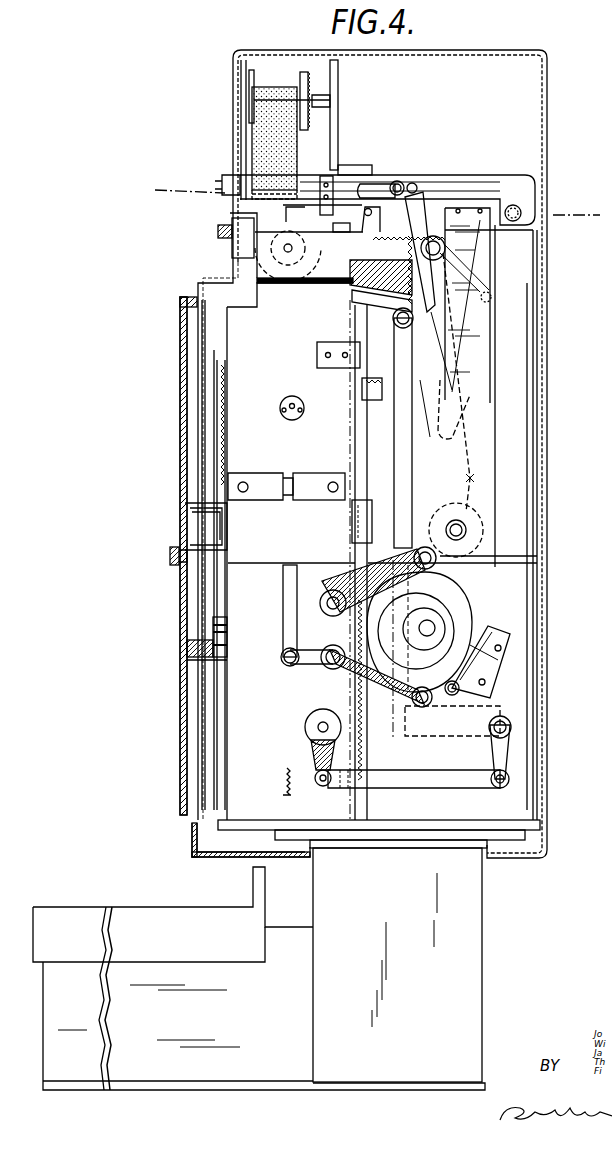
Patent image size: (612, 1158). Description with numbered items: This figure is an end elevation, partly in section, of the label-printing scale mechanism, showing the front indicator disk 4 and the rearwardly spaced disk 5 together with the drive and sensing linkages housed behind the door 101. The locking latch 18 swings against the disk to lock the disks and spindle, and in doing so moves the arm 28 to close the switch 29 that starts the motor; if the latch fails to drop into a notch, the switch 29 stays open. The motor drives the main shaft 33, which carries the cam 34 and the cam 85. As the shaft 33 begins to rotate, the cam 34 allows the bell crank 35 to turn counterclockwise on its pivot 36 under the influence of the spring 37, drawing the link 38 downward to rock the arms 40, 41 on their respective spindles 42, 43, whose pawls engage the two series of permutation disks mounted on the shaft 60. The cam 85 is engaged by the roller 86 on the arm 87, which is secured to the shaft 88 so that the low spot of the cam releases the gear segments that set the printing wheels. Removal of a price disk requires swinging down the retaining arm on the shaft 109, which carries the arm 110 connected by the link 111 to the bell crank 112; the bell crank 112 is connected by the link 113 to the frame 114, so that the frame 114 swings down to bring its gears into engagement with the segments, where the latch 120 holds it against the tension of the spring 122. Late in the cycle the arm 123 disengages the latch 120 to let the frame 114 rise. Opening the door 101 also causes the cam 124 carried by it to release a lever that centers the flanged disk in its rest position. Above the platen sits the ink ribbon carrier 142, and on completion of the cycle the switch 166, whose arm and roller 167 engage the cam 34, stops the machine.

The disk 4 is at (216, 376).
The disk 5 is at (360, 760).
The locking latch 18 is at (360, 527).
The arm 28 is at (378, 389).
The switch 29 is at (357, 368).
The shaft 33 is at (430, 628).
The cam 34 is at (458, 640).
The bell crank 35 is at (384, 700).
The pivot 36 is at (333, 670).
The spring 37 is at (285, 782).
The link 38 is at (286, 600).
The arm 40 is at (270, 482).
The arm 41 is at (313, 482).
The spindle 42 is at (243, 482).
The spindle 43 is at (333, 482).
The shaft 60 is at (281, 407).
The cam 85 is at (462, 596).
The roller 86 is at (432, 558).
The arm 87 is at (377, 576).
The shaft 88 is at (326, 598).
The door 101 is at (190, 397).
The shaft 109 is at (318, 728).
The arm 110 is at (316, 776).
The link 111 is at (424, 772).
The bell crank 112 is at (492, 750).
The link 113 is at (403, 368).
The frame 114 is at (420, 296).
The latch 120 is at (460, 282).
The spring 122 is at (381, 286).
The arm 123 is at (472, 481).
The cam 124 is at (190, 652).
The ink ribbon carrier 142 is at (250, 112).
The switch 166 is at (487, 668).
The arm and roller 167 is at (450, 694).